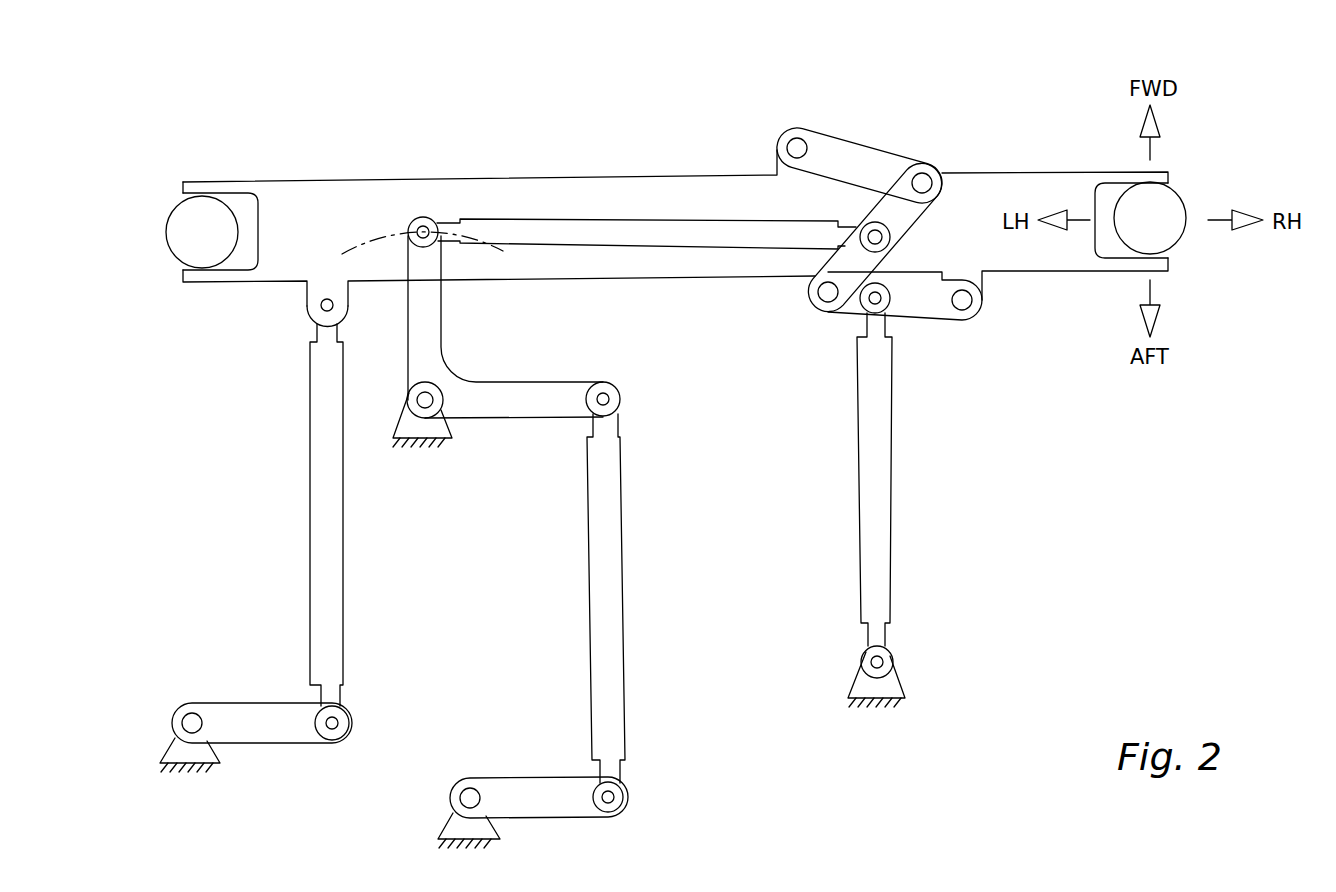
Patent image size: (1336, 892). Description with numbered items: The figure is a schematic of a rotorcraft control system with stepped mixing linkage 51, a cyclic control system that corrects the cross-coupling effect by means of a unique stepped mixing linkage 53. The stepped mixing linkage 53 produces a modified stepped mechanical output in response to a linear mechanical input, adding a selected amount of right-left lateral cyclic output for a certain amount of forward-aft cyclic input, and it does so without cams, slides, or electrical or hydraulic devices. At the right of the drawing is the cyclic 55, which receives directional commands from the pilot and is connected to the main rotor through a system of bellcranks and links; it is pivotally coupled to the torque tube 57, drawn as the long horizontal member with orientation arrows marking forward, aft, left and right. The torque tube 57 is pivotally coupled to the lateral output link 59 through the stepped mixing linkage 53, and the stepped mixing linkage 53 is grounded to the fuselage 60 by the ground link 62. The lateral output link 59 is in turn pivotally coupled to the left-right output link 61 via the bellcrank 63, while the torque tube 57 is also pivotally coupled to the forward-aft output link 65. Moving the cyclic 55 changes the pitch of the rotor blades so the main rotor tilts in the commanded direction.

The rotorcraft control system with stepped mixing linkage 51 is at (678, 94).
The stepped mixing linkage 53 is at (893, 137).
The cyclic 55 is at (1181, 244).
The torque tube 57 is at (343, 181).
The lateral output link 59 is at (572, 217).
The fuselage 60 is at (905, 679).
The left-right output link 61 is at (622, 532).
The ground link 62 is at (893, 430).
The bellcrank 63 is at (543, 382).
The forward-aft output link 65 is at (307, 468).